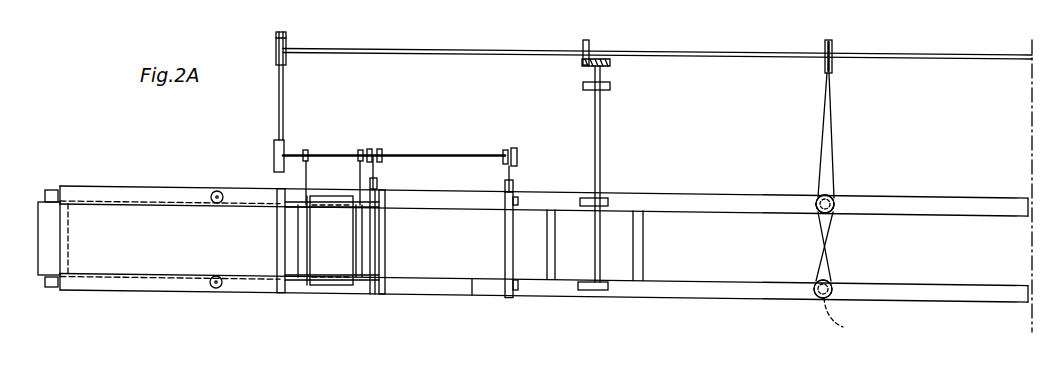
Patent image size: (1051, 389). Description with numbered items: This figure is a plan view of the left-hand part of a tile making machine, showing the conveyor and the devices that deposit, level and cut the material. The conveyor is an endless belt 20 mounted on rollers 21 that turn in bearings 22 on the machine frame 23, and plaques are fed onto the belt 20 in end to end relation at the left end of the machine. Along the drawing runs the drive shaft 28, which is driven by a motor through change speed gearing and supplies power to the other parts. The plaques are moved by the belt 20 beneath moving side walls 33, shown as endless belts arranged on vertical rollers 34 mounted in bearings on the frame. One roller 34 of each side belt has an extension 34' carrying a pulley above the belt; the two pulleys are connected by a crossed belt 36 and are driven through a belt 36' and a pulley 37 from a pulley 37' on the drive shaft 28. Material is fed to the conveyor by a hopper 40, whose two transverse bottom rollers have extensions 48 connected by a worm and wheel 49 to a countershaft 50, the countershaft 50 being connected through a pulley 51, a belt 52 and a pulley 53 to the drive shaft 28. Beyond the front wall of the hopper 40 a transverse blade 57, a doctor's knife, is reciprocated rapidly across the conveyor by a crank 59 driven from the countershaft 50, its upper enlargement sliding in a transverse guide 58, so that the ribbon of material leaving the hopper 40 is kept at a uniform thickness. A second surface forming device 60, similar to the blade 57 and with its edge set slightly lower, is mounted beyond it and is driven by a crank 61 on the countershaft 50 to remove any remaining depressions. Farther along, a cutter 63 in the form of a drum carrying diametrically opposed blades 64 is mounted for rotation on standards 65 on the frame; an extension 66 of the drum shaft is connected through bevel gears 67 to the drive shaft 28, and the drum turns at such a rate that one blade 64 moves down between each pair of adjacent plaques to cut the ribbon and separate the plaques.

The endless belt 20 is at (134, 262).
The rollers 21 is at (70, 243).
The bearings 22 is at (47, 190).
The machine frame 23 is at (170, 291).
The drive shaft 28 is at (425, 49).
The moving side walls 33 is at (247, 200).
The vertical rollers 34 is at (525, 244).
The extension 34' is at (824, 246).
The crossed belt 36 is at (854, 246).
The belt 36' is at (851, 135).
The pulley 37 is at (851, 188).
The pulley 37' is at (851, 46).
The hopper 40 is at (290, 230).
The extensions 48 is at (306, 178).
The worm and wheel 49 is at (306, 150).
The countershaft 50 is at (443, 154).
The pulley 51 is at (276, 146).
The belt 52 is at (286, 92).
The pulley 53 is at (287, 37).
The blade 57 is at (380, 183).
The transverse guide 58 is at (381, 226).
The crank 59 is at (382, 152).
The second surface forming device 60 is at (514, 186).
The crank 61 is at (512, 150).
The cutter 63 is at (618, 266).
The blades 64 is at (594, 258).
The standards 65 is at (613, 193).
The extension 66 is at (601, 112).
The bevel gears 67 is at (582, 64).